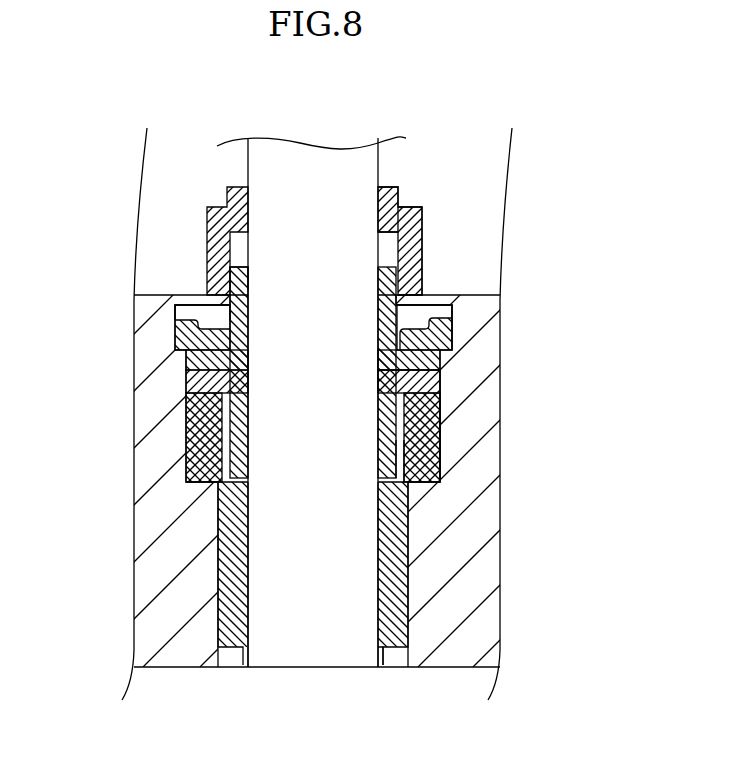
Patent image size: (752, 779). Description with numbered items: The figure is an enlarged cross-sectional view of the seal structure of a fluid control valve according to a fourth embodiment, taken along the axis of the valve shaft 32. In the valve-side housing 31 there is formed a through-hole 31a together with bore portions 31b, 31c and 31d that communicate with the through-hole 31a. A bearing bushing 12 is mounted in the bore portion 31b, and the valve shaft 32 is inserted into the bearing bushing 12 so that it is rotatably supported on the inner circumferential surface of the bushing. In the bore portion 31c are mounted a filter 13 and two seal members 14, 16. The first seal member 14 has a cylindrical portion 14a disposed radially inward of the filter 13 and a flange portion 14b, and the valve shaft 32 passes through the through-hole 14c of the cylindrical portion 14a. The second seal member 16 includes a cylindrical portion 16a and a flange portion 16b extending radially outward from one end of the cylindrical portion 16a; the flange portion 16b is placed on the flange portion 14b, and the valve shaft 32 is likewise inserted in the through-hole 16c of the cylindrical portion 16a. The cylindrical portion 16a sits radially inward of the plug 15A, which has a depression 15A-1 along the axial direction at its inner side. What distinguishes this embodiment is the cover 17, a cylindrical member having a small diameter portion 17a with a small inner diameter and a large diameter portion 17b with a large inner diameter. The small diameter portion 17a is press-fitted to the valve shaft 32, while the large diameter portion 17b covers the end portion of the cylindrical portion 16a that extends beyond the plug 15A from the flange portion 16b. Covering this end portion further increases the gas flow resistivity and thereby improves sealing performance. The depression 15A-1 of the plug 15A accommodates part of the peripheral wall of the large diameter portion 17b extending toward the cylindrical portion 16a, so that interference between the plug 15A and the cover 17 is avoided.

The bearing bushing 12 is at (232, 549).
The filter 13 is at (195, 436).
The seal member 14 is at (401, 410).
The cylindrical portion 14a is at (443, 434).
The flange portion 14b is at (444, 380).
The through-hole 14c is at (386, 446).
The plug 15A is at (184, 328).
The depression 15A-1 is at (404, 326).
The seal member 16 is at (231, 314).
The cylindrical portion 16a is at (232, 282).
The flange portion 16b is at (190, 359).
The through-hole 16c is at (178, 312).
The cover 17 is at (424, 233).
The small diameter portion 17a is at (393, 196).
The large diameter portion 17b is at (413, 258).
The valve-side housing 31 is at (482, 523).
The through-hole 31a is at (388, 655).
The bore portion 31b is at (403, 576).
The bore portion 31c is at (433, 452).
The bore portion 31d is at (452, 320).
The valve shaft 32 is at (347, 175).